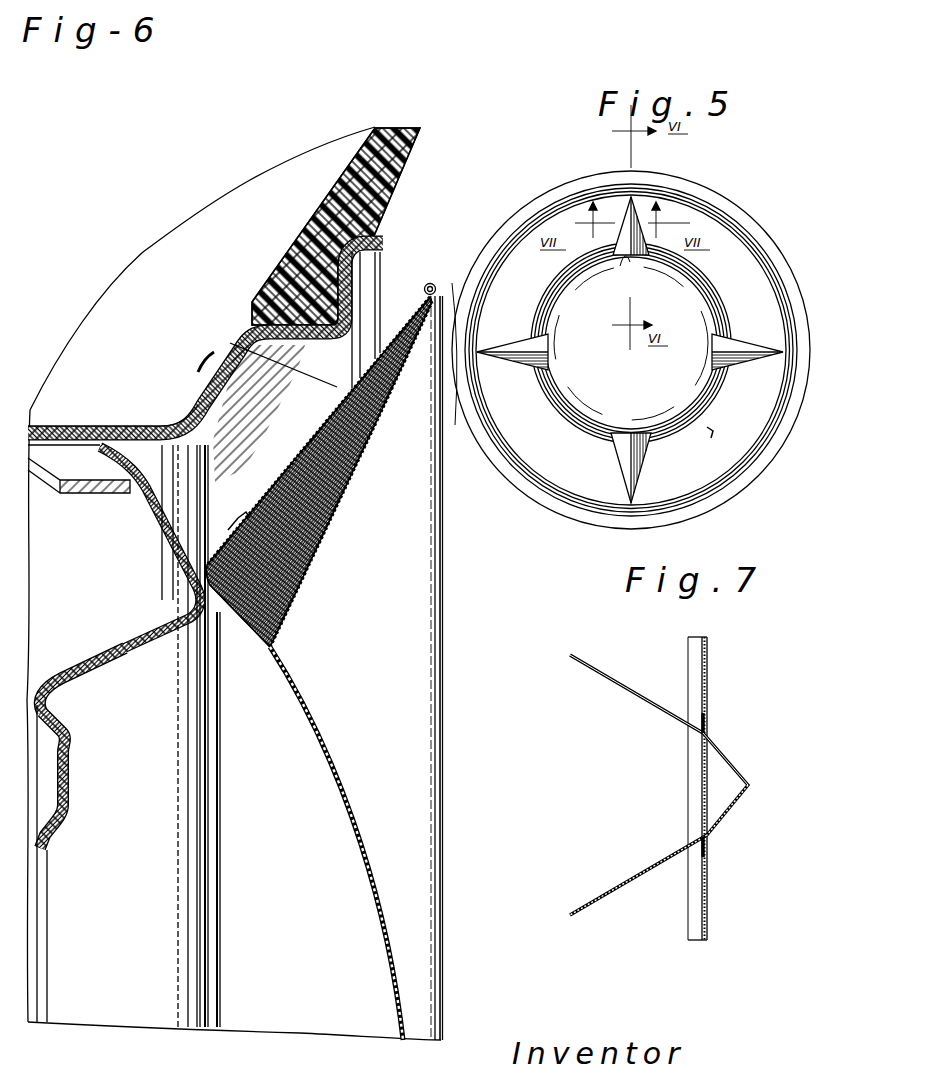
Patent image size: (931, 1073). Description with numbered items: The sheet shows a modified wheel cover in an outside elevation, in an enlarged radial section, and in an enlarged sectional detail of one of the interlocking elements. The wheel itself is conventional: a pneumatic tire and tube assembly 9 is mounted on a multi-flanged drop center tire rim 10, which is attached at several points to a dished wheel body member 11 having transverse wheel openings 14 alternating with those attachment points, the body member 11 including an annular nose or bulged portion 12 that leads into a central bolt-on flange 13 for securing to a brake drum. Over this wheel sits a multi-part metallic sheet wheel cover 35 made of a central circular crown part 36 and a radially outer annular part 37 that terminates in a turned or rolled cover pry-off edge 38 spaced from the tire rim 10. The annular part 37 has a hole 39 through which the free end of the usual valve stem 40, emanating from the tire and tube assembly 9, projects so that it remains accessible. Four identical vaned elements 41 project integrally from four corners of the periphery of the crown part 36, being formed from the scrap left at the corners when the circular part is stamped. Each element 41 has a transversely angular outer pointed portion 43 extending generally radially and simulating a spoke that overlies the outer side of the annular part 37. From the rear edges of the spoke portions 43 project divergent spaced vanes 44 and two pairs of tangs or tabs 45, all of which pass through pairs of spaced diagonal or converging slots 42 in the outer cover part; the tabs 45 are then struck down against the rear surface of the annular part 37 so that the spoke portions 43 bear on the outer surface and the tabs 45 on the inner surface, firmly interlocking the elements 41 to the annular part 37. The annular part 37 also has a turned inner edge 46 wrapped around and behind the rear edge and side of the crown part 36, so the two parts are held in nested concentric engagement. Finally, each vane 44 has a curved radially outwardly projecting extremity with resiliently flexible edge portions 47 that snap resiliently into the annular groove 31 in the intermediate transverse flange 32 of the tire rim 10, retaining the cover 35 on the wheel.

In FIG. 6, the pneumatic tire and tube assembly 9 is at (387, 180).
In FIG. 5, the pneumatic tire and tube assembly 9 is at (743, 208).
In FIG. 6, the tire rim 10 is at (372, 236).
In FIG. 5, the tire rim 10 is at (706, 197).
In FIG. 6, the wheel body member 11 is at (165, 527).
In FIG. 6, the annular nose or bulged portion 12 is at (200, 608).
In FIG. 6, the central bolt-on flange 13 is at (53, 708).
In FIG. 6, the transverse wheel openings 14 is at (88, 457).
In FIG. 6, the annular groove 31 is at (205, 345).
In FIG. 6, the intermediate transverse flange 32 is at (318, 348).
In FIG. 6, the wheel cover 35 is at (444, 862).
In FIG. 6, the central circular crown part 36 is at (400, 978).
In FIG. 5, the central circular crown part 36 is at (645, 395).
In FIG. 6, the radially outer annular part 37 is at (420, 637).
In FIG. 5, the radially outer annular part 37 is at (745, 258).
In FIG. 7, the radially outer annular part 37 is at (710, 900).
In FIG. 6, the cover pry-off edge 38 is at (432, 282).
In FIG. 7, the cover pry-off edge 38 is at (690, 925).
In FIG. 5, the hole 39 is at (712, 443).
In FIG. 5, the valve stem 40 is at (714, 430).
In FIG. 6, the vaned elements 41 is at (340, 506).
In FIG. 5, the vaned elements 41 is at (620, 205).
In FIG. 7, the vaned elements 41 is at (742, 766).
In FIG. 7, the diagonal or converging slots 42 is at (712, 834).
In FIG. 6, the outer pointed portion 43 is at (356, 461).
In FIG. 5, the outer pointed portion 43 is at (620, 252).
In FIG. 7, the outer pointed portion 43 is at (750, 790).
In FIG. 6, the vanes 44 is at (302, 446).
In FIG. 7, the vanes 44 is at (615, 675).
In FIG. 6, the tangs or tabs 45 is at (358, 385).
In FIG. 7, the tangs or tabs 45 is at (700, 716).
In FIG. 6, the turned inner edge 46 is at (216, 655).
In FIG. 6, the resiliently flexible edge portions 47 is at (186, 371).
In FIG. 7, the resiliently flexible edge portions 47 is at (706, 731).